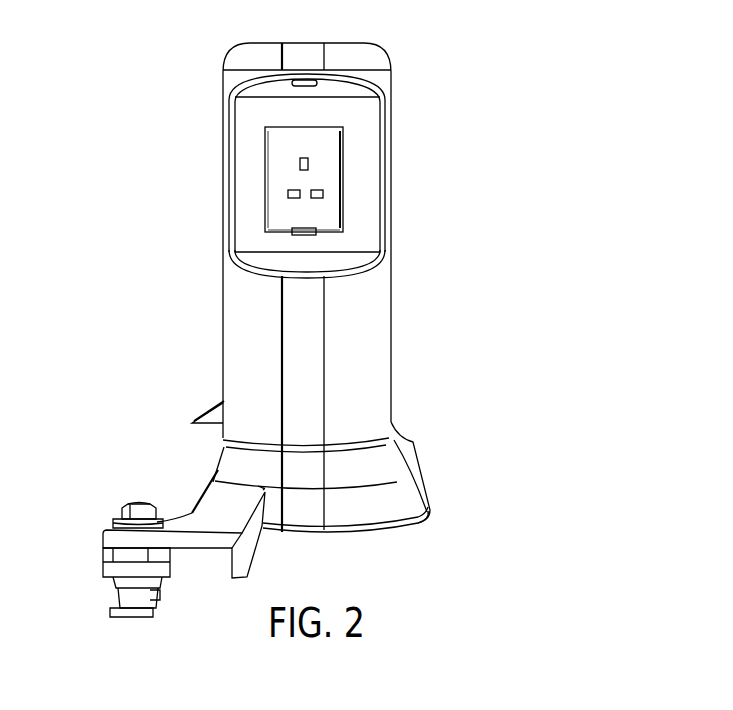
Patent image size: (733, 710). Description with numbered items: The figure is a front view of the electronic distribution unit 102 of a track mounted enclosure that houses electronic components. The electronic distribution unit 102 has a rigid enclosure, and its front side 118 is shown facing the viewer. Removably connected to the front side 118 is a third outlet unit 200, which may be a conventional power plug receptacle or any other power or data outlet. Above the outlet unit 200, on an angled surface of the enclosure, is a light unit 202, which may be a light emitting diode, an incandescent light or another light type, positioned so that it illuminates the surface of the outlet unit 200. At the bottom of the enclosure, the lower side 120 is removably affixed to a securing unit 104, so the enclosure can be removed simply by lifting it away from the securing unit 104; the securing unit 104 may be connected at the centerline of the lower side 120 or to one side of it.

The electronic distribution unit 102 is at (233, 347).
The securing unit 104 is at (200, 493).
The front side 118 is at (190, 294).
The lower side 120 is at (413, 522).
The third outlet unit 200 is at (261, 188).
The light unit 202 is at (319, 83).